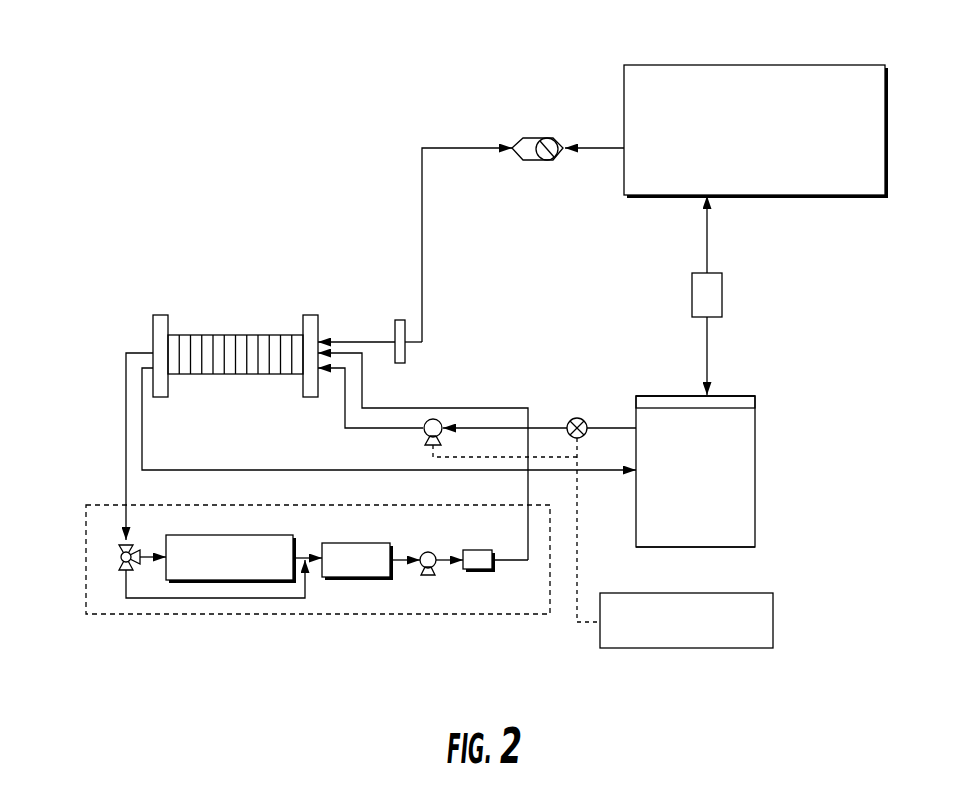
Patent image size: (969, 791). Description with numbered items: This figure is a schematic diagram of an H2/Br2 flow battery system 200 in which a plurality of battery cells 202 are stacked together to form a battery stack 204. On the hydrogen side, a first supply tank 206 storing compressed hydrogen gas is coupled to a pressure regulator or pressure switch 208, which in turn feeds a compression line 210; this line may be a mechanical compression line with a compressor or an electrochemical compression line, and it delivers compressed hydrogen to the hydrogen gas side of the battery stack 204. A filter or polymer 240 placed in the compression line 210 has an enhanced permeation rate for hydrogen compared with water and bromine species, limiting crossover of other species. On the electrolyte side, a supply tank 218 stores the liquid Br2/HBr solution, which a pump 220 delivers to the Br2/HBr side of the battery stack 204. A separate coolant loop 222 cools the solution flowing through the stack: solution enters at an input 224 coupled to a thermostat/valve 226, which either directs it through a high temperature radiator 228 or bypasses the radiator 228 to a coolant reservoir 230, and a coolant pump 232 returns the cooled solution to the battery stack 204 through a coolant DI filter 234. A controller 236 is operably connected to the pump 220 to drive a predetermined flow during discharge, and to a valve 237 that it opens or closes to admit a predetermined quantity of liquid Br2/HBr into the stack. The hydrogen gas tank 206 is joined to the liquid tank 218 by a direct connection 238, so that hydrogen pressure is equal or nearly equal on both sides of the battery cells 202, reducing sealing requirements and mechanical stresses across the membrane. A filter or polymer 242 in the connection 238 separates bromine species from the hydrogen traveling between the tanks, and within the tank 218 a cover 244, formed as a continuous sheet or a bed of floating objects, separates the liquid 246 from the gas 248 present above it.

The flow battery system 200 is at (185, 102).
The battery cells 202 is at (190, 335).
The battery stack 204 is at (230, 300).
The first supply tank 206 is at (624, 82).
The pressure regulator 208 is at (525, 140).
The compression line 210 is at (422, 168).
The supply tank 218 is at (755, 485).
The pump 220 is at (425, 440).
The coolant loop 222 is at (86, 523).
The input 224 is at (126, 500).
The thermostat/valve 226 is at (118, 557).
The high temperature radiator 228 is at (240, 533).
The coolant reservoir 230 is at (350, 541).
The coolant pump 232 is at (428, 552).
The coolant DI filter 234 is at (480, 570).
The controller 236 is at (773, 620).
The valve 237 is at (567, 420).
The direct connection 238 is at (707, 362).
The filter or polymer 240 is at (405, 352).
The filter or polymer 242 is at (722, 297).
The cover 244 is at (636, 405).
The liquid 246 is at (742, 533).
The gas 248 is at (748, 400).